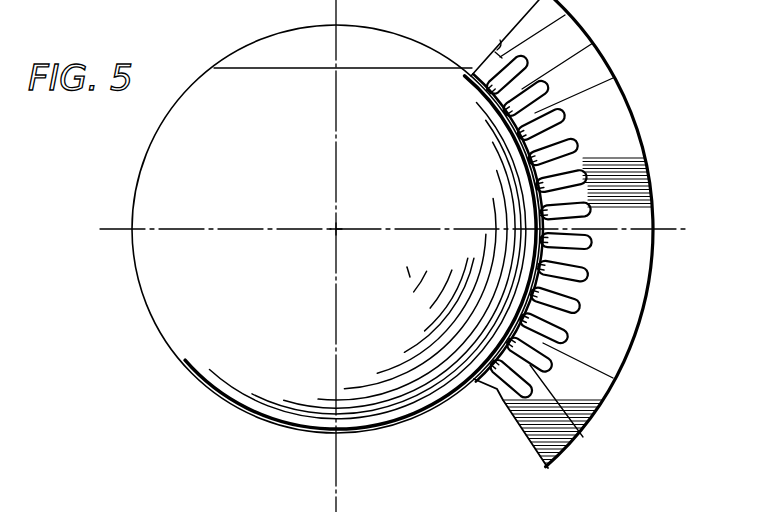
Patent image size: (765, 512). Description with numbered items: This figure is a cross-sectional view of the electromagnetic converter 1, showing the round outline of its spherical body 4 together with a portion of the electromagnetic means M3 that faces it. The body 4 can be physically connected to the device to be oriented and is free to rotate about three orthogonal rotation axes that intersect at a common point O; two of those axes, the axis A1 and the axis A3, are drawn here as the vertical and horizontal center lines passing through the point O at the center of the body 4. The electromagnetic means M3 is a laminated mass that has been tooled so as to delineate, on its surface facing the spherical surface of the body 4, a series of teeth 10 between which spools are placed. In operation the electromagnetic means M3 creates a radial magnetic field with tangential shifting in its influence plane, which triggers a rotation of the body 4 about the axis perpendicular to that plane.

The electromagnetic converter 1 is at (142, 144).
The body 4 is at (152, 266).
The teeth 10 is at (500, 52).
The axis A1 is at (336, 170).
The axis A3 is at (272, 229).
The common point O is at (338, 227).
The electromagnetic means M3 is at (636, 103).